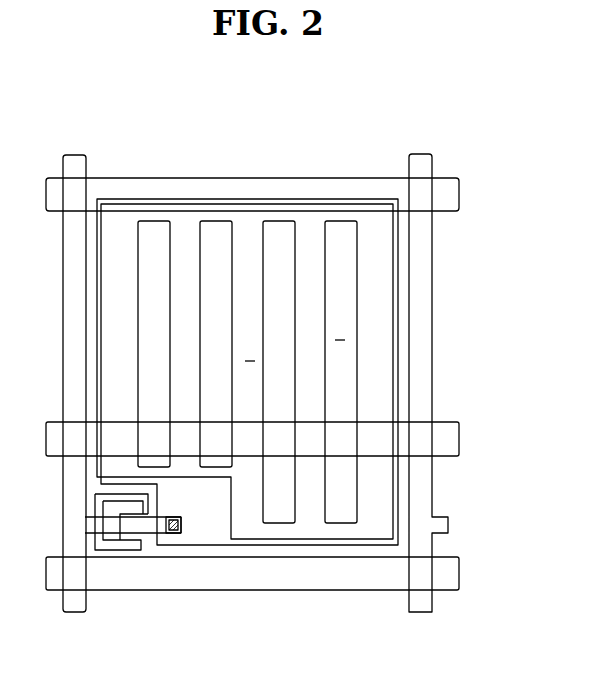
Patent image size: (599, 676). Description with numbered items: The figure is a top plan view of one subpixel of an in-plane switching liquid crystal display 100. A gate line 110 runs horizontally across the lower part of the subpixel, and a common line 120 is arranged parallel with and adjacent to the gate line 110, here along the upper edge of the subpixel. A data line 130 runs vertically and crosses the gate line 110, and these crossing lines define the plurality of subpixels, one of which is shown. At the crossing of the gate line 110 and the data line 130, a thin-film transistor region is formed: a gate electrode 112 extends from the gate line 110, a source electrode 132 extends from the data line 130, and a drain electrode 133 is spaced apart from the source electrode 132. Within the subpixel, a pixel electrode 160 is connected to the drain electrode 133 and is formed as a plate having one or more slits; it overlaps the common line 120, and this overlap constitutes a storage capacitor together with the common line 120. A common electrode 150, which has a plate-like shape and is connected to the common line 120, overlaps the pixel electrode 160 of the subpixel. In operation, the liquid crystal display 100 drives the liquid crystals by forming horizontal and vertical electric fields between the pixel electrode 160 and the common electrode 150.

The liquid crystal display 100 is at (62, 133).
The gate line 110 is at (459, 573).
The gate electrode 112 is at (149, 547).
The common line 120 is at (453, 196).
The data line 130 is at (75, 603).
The source electrode 132 is at (122, 550).
The drain electrode 133 is at (175, 534).
The common electrode 150 is at (396, 482).
The pixel electrode 160 is at (396, 385).